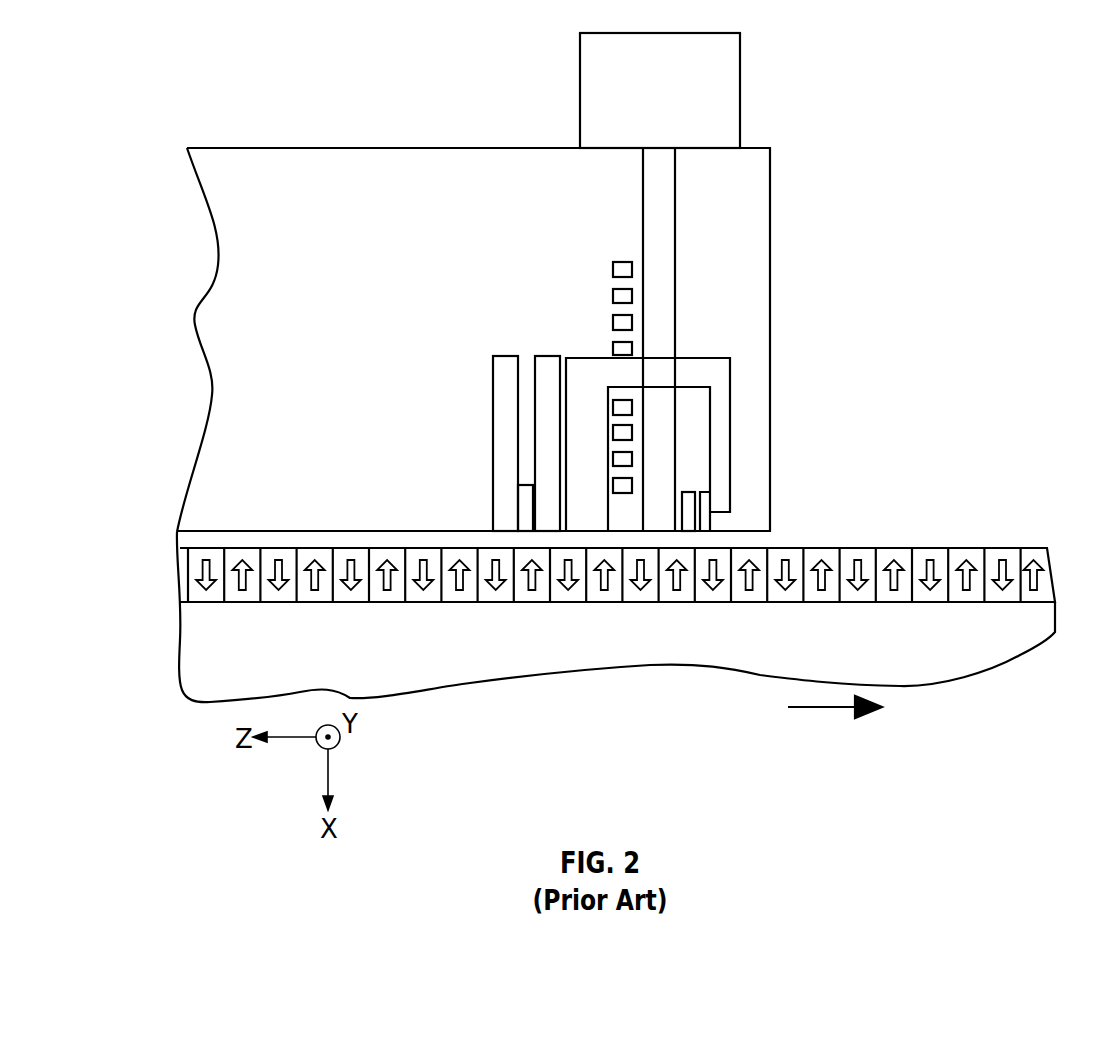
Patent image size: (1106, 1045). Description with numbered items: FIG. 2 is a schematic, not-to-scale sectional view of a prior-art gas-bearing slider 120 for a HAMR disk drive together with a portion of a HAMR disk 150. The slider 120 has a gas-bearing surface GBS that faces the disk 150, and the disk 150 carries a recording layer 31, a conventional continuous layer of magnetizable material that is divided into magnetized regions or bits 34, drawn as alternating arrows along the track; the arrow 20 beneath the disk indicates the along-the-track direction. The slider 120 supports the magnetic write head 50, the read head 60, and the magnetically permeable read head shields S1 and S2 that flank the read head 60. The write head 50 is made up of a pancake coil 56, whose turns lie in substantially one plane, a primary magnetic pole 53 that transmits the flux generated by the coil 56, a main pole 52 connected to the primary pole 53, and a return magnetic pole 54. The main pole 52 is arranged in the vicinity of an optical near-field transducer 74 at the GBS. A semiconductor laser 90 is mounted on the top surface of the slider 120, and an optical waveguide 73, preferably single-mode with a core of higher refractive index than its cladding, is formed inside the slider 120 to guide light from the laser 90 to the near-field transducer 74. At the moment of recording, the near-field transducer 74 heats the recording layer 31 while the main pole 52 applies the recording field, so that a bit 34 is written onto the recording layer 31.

The gas-bearing slider 120 is at (222, 422).
The semiconductor laser 90 is at (725, 90).
The optical waveguide 73 is at (657, 300).
The magnetic write head 50 is at (576, 364).
The coil 56 is at (612, 268).
The return magnetic pole 54 is at (588, 372).
The primary magnetic pole 53 is at (720, 407).
The main pole 52 is at (715, 523).
The optical near-field transducer 74 is at (688, 492).
The read head shield S1 is at (505, 443).
The read head shield S2 is at (548, 357).
The read head 60 is at (517, 513).
The gas-bearing surface GBS is at (748, 536).
The disk 150 is at (928, 668).
The recording layer 31 is at (582, 558).
The bit 34 is at (998, 560).
The medium motion direction 20 is at (822, 708).